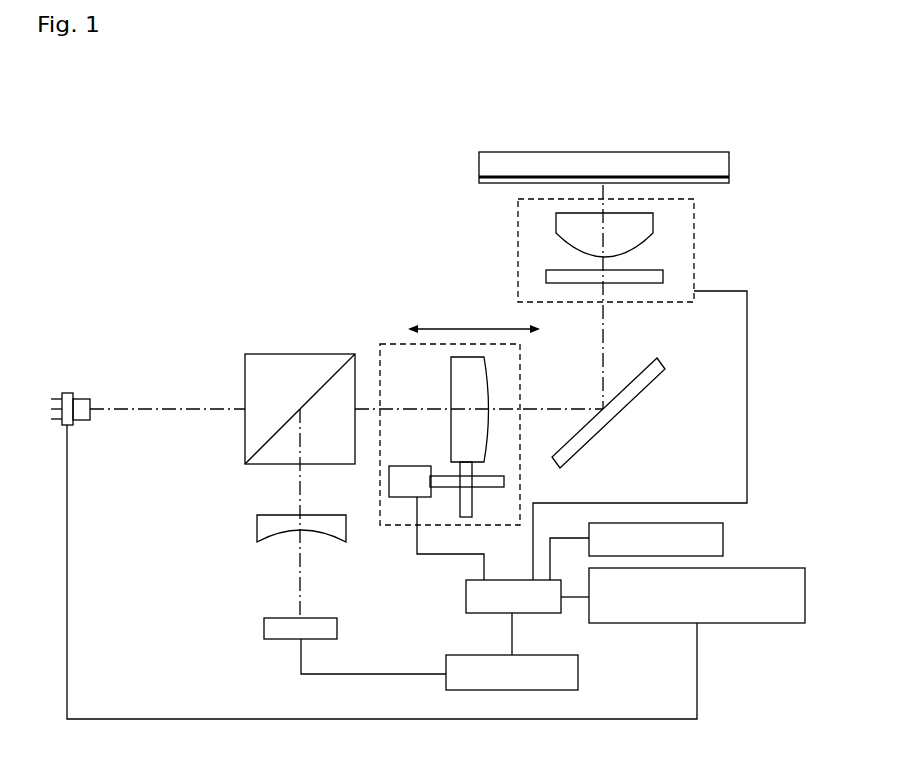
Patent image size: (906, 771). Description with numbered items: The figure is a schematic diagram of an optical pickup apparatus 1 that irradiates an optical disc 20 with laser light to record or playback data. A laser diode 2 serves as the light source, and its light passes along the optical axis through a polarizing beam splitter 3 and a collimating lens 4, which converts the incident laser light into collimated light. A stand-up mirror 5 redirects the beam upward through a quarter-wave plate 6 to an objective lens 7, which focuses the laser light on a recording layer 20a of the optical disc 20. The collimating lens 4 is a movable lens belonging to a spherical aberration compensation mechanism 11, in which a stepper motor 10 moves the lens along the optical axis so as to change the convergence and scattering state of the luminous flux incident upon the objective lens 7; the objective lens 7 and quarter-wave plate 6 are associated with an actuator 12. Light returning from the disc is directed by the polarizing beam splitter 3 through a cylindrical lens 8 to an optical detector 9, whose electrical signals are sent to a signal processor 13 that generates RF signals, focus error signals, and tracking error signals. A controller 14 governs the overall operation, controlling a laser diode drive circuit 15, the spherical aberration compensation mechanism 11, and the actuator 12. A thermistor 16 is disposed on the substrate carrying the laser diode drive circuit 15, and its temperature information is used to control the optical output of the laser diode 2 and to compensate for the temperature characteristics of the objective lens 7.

The optical pickup apparatus 1 is at (332, 145).
The laser diode 2 is at (68, 393).
The polarizing beam splitter 3 is at (300, 382).
The collimating lens 4 is at (451, 380).
The stand-up mirror 5 is at (662, 362).
The quarter-wave plate 6 is at (546, 275).
The objective lens 7 is at (556, 223).
The cylindrical lens 8 is at (257, 527).
The optical detector 9 is at (264, 628).
The stepper motor 10 is at (399, 497).
The spherical aberration compensation mechanism 11 is at (393, 342).
The actuator 12 is at (694, 268).
The signal processor 13 is at (446, 662).
The controller 14 is at (466, 595).
The laser diode drive circuit 15 is at (773, 623).
The thermistor 16 is at (725, 540).
The optical disc 20 is at (600, 152).
The recording layer 20a is at (705, 178).